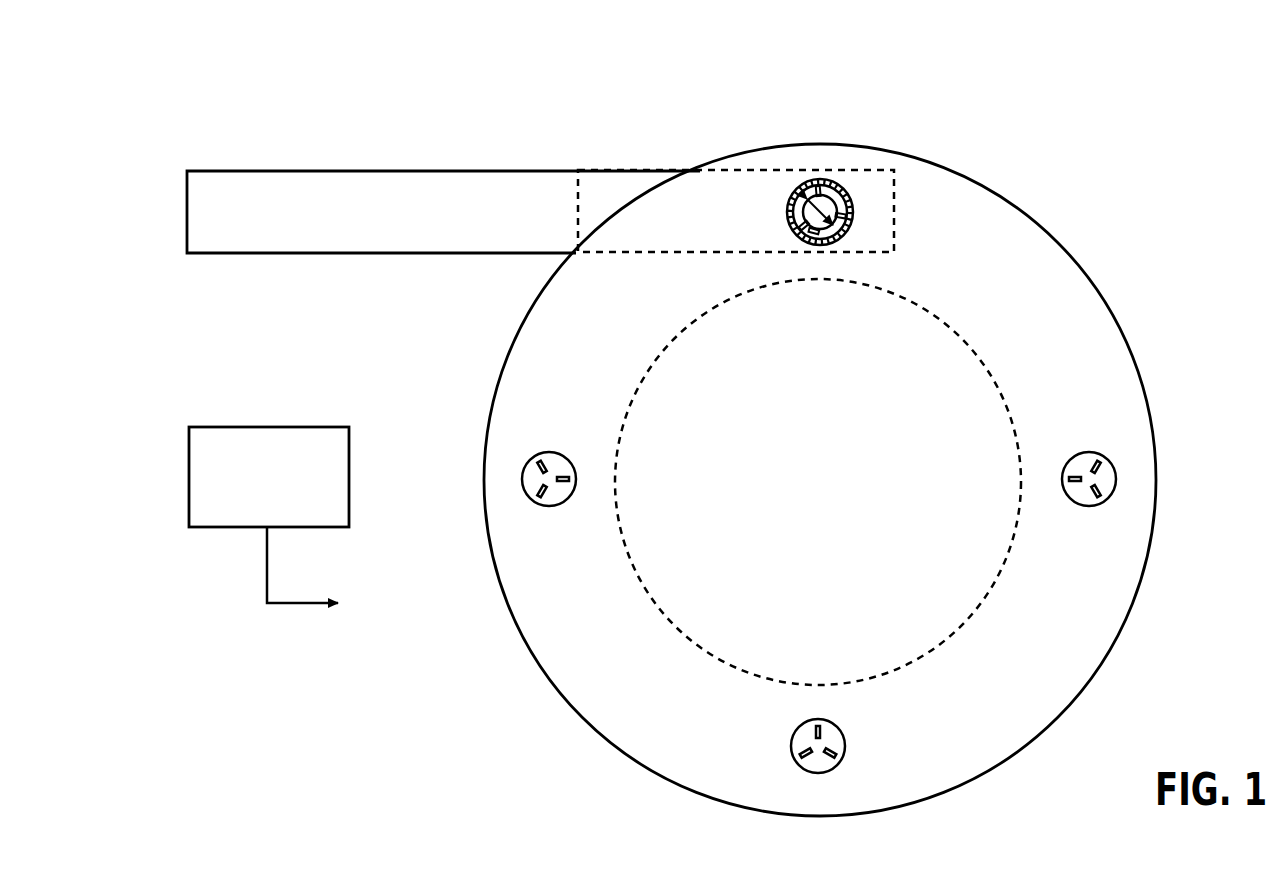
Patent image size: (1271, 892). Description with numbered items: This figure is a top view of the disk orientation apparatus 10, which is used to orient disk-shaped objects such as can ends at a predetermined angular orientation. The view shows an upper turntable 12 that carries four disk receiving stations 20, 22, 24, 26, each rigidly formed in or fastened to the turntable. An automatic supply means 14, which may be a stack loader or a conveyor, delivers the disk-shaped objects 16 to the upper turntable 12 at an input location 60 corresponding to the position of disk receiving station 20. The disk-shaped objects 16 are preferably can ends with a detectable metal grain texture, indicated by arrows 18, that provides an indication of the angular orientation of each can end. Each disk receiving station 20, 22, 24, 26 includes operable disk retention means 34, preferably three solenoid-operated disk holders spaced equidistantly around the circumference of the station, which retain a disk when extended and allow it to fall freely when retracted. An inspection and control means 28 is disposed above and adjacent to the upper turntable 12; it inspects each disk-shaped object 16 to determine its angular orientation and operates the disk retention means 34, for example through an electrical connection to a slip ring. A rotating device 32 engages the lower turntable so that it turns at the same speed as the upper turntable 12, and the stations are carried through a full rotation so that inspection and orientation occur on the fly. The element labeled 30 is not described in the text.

The disk orientation apparatus 10 is at (856, 52).
The upper turntable 12 is at (1080, 322).
The automatic supply means 14 is at (855, 212).
The disk-shaped object 16 is at (840, 190).
The arrows 18 is at (798, 210).
The disk receiving station 20 is at (784, 189).
The disk receiving station 22 is at (549, 448).
The disk receiving station 24 is at (789, 738).
The disk receiving station 26 is at (1089, 448).
The inspection and control means 28 is at (268, 443).
The bar 30 is at (275, 193).
The rotating device 32 is at (1018, 412).
The operable disk retention means 34 is at (793, 230).
The input location 60 is at (786, 140).